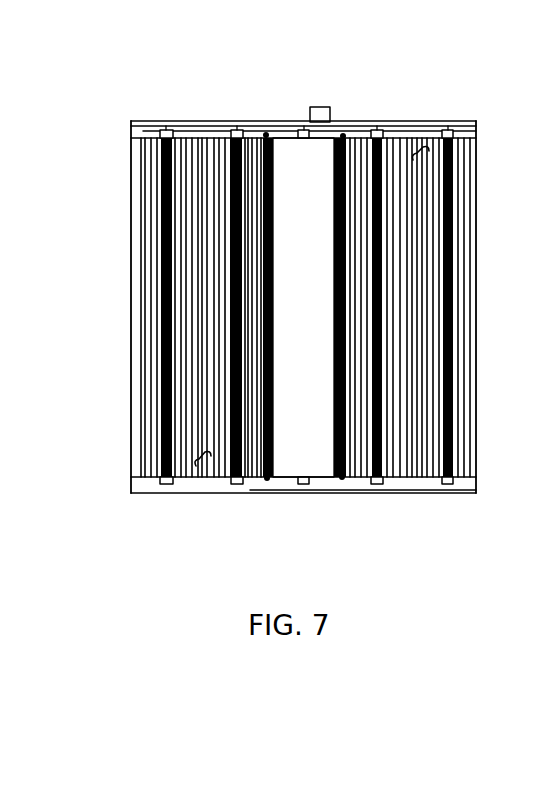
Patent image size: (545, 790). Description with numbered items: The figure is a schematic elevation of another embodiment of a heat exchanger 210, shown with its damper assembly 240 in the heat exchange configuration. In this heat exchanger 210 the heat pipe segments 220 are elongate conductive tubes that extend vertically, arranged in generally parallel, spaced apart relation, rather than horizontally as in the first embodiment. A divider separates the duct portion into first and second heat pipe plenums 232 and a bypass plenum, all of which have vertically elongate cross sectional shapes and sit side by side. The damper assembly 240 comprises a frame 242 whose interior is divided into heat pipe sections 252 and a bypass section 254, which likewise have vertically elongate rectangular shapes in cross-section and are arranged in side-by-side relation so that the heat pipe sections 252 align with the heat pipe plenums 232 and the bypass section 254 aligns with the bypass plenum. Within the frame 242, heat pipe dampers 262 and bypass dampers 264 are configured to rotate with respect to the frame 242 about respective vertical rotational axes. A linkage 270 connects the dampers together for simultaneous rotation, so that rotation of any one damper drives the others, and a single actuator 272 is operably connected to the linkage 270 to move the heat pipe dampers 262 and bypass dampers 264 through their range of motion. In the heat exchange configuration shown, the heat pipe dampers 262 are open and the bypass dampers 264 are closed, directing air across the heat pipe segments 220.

The heat exchanger 210 is at (127, 612).
The heat pipe segments 220 is at (217, 173).
The heat pipe plenums 232 is at (203, 466).
The damper assembly 240 is at (373, 518).
The frame 242 is at (142, 493).
The heat pipe sections 252 is at (188, 146).
The bypass section 254 is at (280, 463).
The heat pipe dampers 262 is at (235, 263).
The bypass dampers 264 is at (318, 452).
The linkage 270 is at (135, 122).
The actuator 272 is at (318, 107).